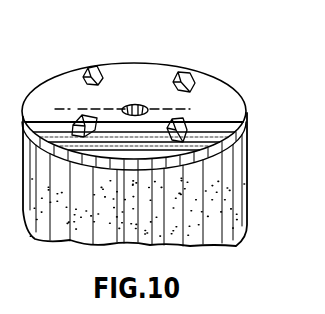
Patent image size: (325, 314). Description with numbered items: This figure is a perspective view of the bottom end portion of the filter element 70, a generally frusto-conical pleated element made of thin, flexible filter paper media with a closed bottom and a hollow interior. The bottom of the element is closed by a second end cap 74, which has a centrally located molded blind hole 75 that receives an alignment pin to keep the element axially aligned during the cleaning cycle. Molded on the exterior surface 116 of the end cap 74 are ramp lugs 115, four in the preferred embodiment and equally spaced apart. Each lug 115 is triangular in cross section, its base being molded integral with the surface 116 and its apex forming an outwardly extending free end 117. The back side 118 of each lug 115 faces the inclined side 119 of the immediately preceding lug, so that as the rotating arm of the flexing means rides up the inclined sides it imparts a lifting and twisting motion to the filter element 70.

The filter element 70 is at (252, 198).
The second end cap 74 is at (122, 70).
The exterior surface 116 is at (45, 98).
The blind hole 75 is at (134, 104).
The ramp lug 115 is at (93, 66).
The back side 118 is at (83, 77).
The inclined side 119 is at (183, 75).
The free end 117 is at (180, 123).